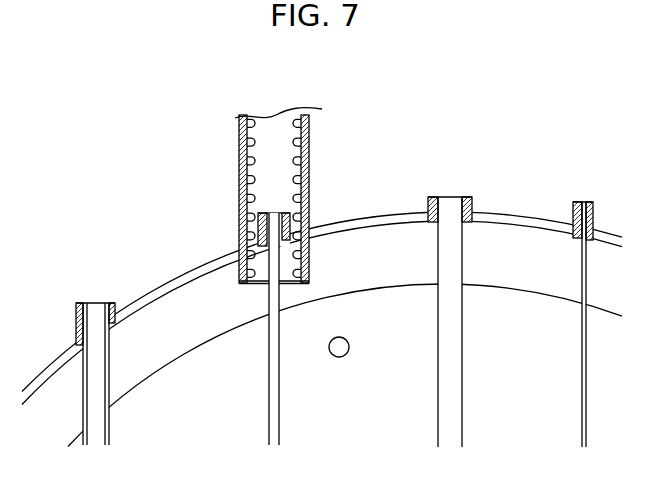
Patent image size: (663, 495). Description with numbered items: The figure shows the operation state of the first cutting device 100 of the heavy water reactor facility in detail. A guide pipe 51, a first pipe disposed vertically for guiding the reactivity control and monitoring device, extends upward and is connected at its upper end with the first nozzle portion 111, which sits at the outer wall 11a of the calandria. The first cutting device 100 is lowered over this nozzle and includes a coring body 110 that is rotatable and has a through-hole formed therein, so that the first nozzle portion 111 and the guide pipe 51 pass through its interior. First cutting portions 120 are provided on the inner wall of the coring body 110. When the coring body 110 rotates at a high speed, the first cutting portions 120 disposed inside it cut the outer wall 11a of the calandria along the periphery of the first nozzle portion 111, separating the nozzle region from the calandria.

The first cutting device 100 is at (321, 196).
The coring body 110 is at (310, 142).
The first cutting portions 120 is at (312, 167).
The first nozzle portion 111 is at (248, 230).
The outer wall of the calandria 11a is at (401, 215).
The guide pipe 51 is at (278, 420).